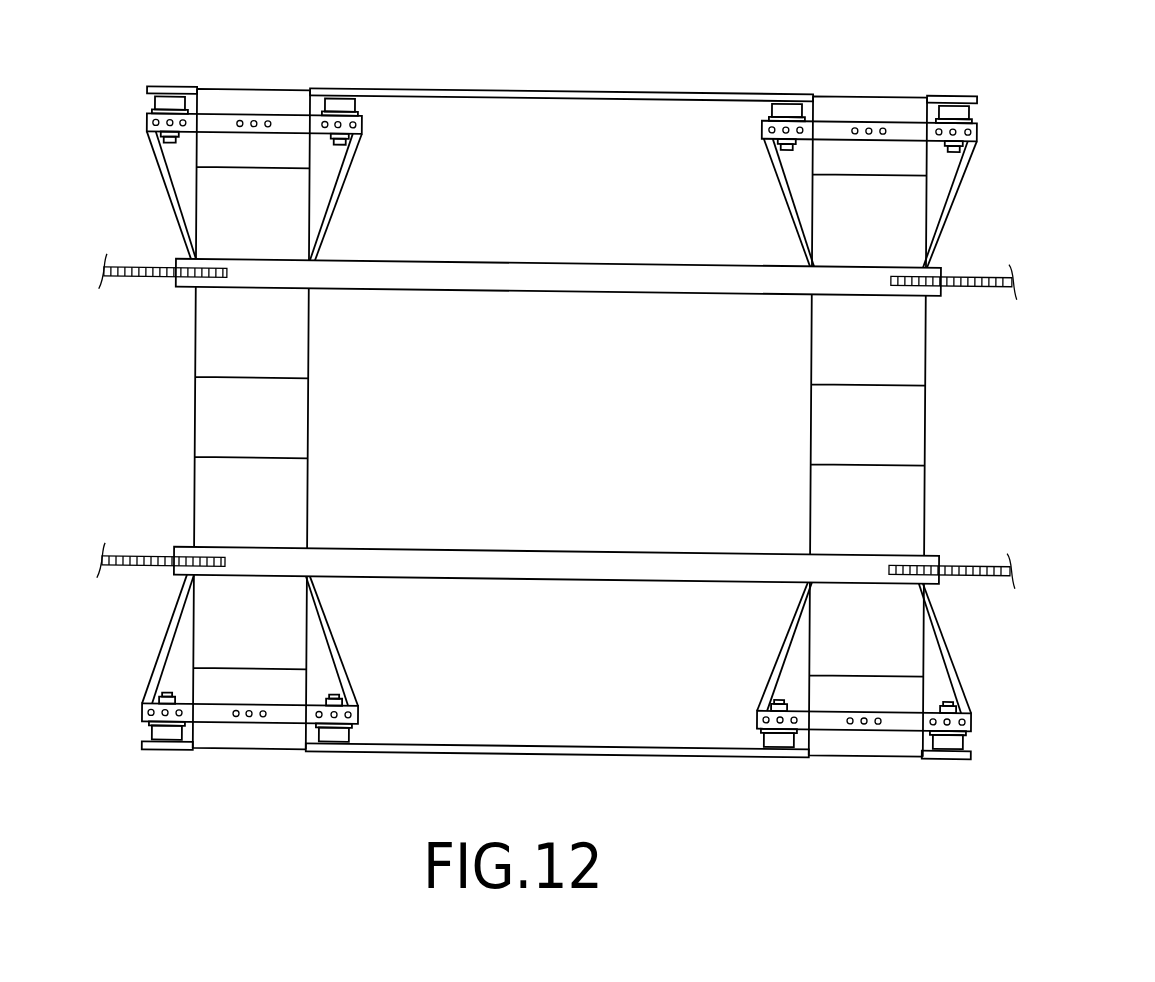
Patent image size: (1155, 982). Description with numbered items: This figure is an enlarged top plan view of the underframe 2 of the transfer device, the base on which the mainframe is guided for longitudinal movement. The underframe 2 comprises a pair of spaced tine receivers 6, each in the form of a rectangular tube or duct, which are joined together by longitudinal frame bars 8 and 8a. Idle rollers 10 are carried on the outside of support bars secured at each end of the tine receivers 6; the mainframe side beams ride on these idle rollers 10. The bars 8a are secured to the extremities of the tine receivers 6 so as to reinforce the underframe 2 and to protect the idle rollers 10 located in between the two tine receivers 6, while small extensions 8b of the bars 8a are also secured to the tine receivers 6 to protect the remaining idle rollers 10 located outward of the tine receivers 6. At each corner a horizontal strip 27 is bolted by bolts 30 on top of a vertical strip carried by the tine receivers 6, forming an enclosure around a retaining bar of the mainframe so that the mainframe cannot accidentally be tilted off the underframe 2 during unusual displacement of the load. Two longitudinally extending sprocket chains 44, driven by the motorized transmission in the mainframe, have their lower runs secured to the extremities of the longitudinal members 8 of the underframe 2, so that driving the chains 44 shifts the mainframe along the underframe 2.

The underframe 2 is at (1048, 369).
The tine receivers 6 is at (310, 337).
The longitudinal frame bars 8 is at (653, 296).
The bars 8a is at (545, 90).
The small extensions 8b is at (178, 88).
The idle rollers 10 is at (338, 97).
The horizontal strip 27 is at (362, 122).
The bolts 30 is at (256, 131).
The sprocket chains 44 is at (990, 280).